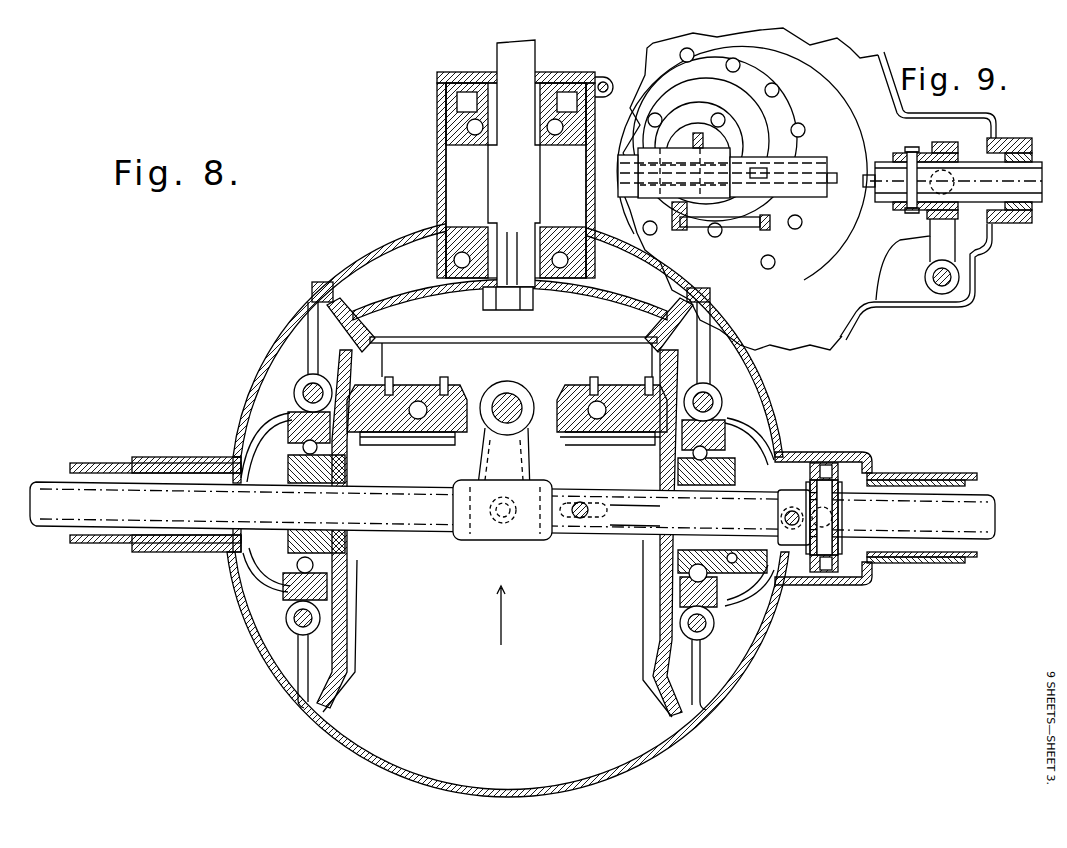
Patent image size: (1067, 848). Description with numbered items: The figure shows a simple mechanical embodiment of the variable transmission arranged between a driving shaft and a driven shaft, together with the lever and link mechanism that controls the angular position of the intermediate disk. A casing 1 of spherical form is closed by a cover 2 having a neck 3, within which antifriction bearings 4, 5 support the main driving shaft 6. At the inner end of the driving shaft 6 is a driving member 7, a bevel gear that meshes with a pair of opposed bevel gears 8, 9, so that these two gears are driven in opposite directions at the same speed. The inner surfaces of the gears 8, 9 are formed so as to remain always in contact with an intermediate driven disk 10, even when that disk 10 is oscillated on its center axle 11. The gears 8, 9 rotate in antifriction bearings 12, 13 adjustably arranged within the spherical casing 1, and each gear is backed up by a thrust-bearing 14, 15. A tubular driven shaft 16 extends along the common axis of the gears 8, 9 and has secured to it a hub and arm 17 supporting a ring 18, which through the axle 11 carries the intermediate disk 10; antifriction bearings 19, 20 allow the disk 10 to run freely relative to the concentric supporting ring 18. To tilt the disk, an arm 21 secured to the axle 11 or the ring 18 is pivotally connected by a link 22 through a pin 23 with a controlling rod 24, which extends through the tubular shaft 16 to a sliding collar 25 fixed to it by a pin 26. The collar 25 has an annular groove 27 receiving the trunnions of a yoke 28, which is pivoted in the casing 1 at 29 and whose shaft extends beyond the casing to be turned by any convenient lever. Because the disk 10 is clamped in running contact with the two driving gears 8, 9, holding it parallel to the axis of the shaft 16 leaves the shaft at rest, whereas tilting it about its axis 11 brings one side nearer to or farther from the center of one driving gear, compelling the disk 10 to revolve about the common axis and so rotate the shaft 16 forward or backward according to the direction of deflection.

In FIG. 8, the casing 1 is at (340, 745).
In FIG. 8, the cover 2 is at (378, 263).
In FIG. 8, the neck 3 is at (437, 176).
In FIG. 8, the antifriction bearing 4 is at (446, 118).
In FIG. 8, the antifriction bearing 5 is at (447, 238).
In FIG. 8, the main driving shaft 6 is at (526, 66).
In FIG. 8, the driving member 7 is at (585, 308).
In FIG. 8, the bevel gear 8 is at (345, 697).
In FIG. 8, the bevel gear 9 is at (657, 699).
In FIG. 8, the intermediate driven disk 10 is at (420, 385).
In FIG. 8, the center axle 11 is at (512, 404).
In FIG. 8, the antifriction bearing 12 is at (282, 410).
In FIG. 8, the antifriction bearing 13 is at (725, 416).
In FIG. 8, the thrust-bearing 14 is at (257, 456).
In FIG. 8, the thrust-bearing 15 is at (746, 457).
In FIG. 8, the driven shaft 16 is at (935, 515).
In FIG. 9, the driven shaft 16 is at (1017, 192).
In FIG. 8, the hub and arm 17 is at (528, 462).
In FIG. 8, the ring 18 is at (438, 432).
In FIG. 8, the antifriction bearing 19 is at (420, 420).
In FIG. 8, the antifriction bearing 20 is at (598, 426).
In FIG. 8, the arm 21 is at (456, 536).
In FIG. 9, the arm 21 is at (680, 235).
In FIG. 8, the link 22 is at (515, 531).
In FIG. 9, the link 22 is at (732, 222).
In FIG. 8, the pin 23 is at (581, 520).
In FIG. 9, the pin 23 is at (812, 188).
In FIG. 8, the controlling rod 24 is at (645, 532).
In FIG. 9, the controlling rod 24 is at (866, 165).
In FIG. 8, the sliding collar 25 is at (796, 546).
In FIG. 9, the sliding collar 25 is at (962, 156).
In FIG. 8, the pin 26 is at (836, 541).
In FIG. 9, the pin 26 is at (912, 213).
In FIG. 8, the annular groove 27 is at (832, 522).
In FIG. 8, the yoke 28 is at (845, 473).
In FIG. 9, the yoke 28 is at (956, 232).
In FIG. 9, the pivot 29 is at (942, 287).